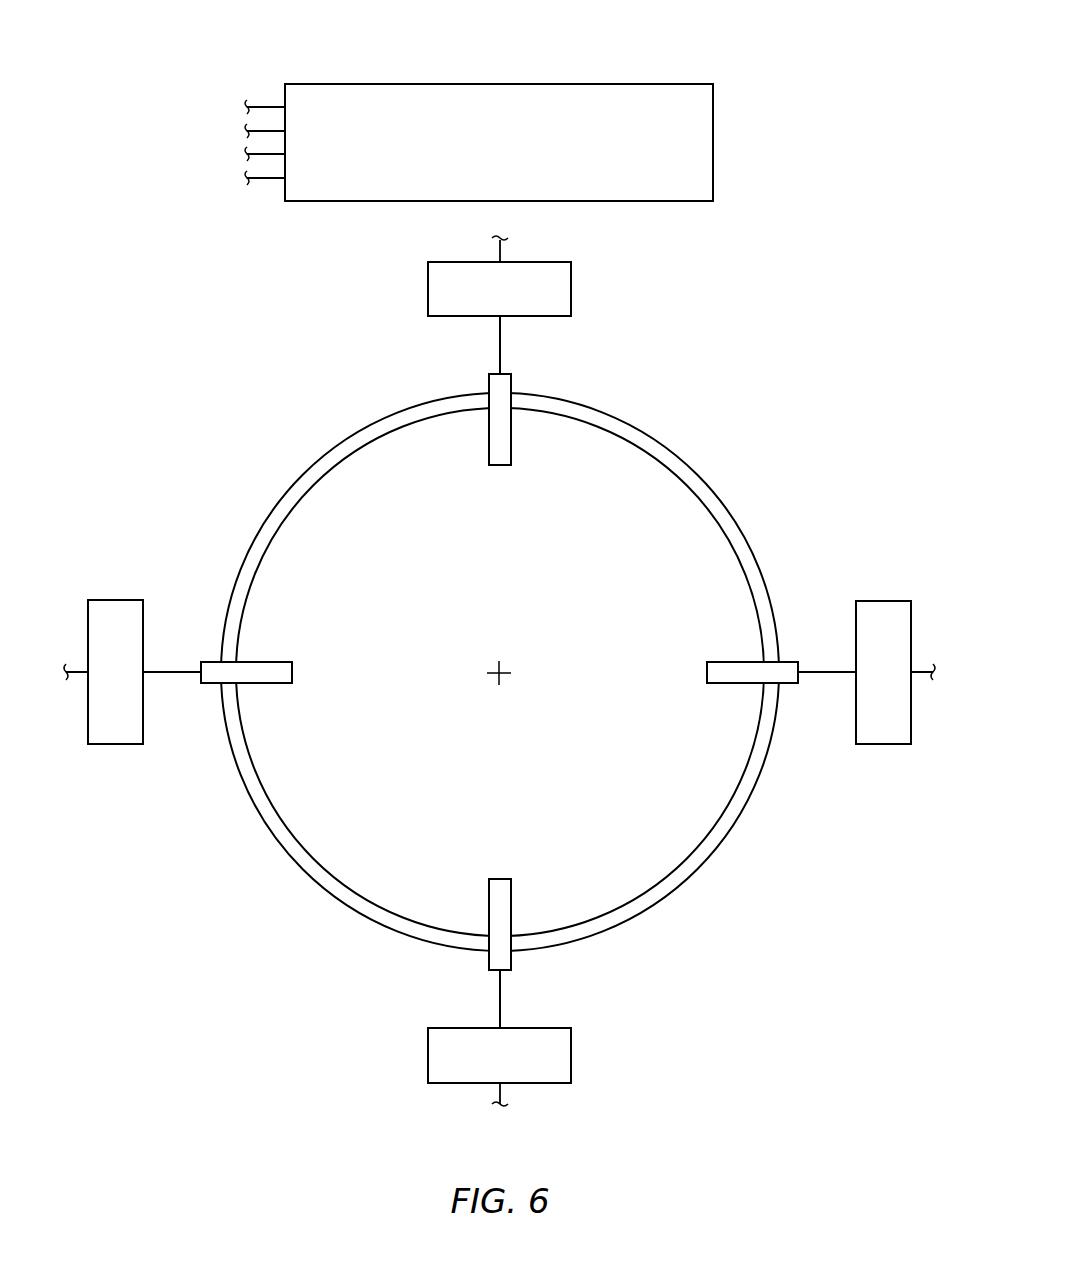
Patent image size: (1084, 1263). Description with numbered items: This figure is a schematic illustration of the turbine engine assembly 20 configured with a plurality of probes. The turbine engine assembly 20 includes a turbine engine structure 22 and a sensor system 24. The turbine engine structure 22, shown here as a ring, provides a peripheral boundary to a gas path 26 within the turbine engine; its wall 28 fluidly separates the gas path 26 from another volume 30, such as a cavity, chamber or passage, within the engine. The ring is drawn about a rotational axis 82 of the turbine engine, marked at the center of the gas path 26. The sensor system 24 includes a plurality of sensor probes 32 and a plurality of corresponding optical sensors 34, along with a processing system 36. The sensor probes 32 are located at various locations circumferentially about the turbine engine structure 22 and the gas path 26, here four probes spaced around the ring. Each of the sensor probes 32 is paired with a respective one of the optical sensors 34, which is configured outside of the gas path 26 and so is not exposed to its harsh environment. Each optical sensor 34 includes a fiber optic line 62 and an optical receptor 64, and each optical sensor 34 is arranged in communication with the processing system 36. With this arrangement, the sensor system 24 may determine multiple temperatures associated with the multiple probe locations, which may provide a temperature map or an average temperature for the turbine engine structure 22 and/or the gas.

The turbine engine assembly 20 is at (854, 86).
The turbine engine structure 22 is at (660, 428).
The sensor system 24 is at (770, 100).
The gas path 26 is at (591, 581).
The wall 28 is at (718, 492).
The volume 30 is at (786, 358).
The sensor probe 32 is at (480, 455).
The optical sensor 34 is at (412, 335).
The processing system 36 is at (722, 160).
The fiber optic line 62 is at (510, 353).
The optical receptor 64 is at (581, 289).
The rotational axis 82 is at (500, 676).